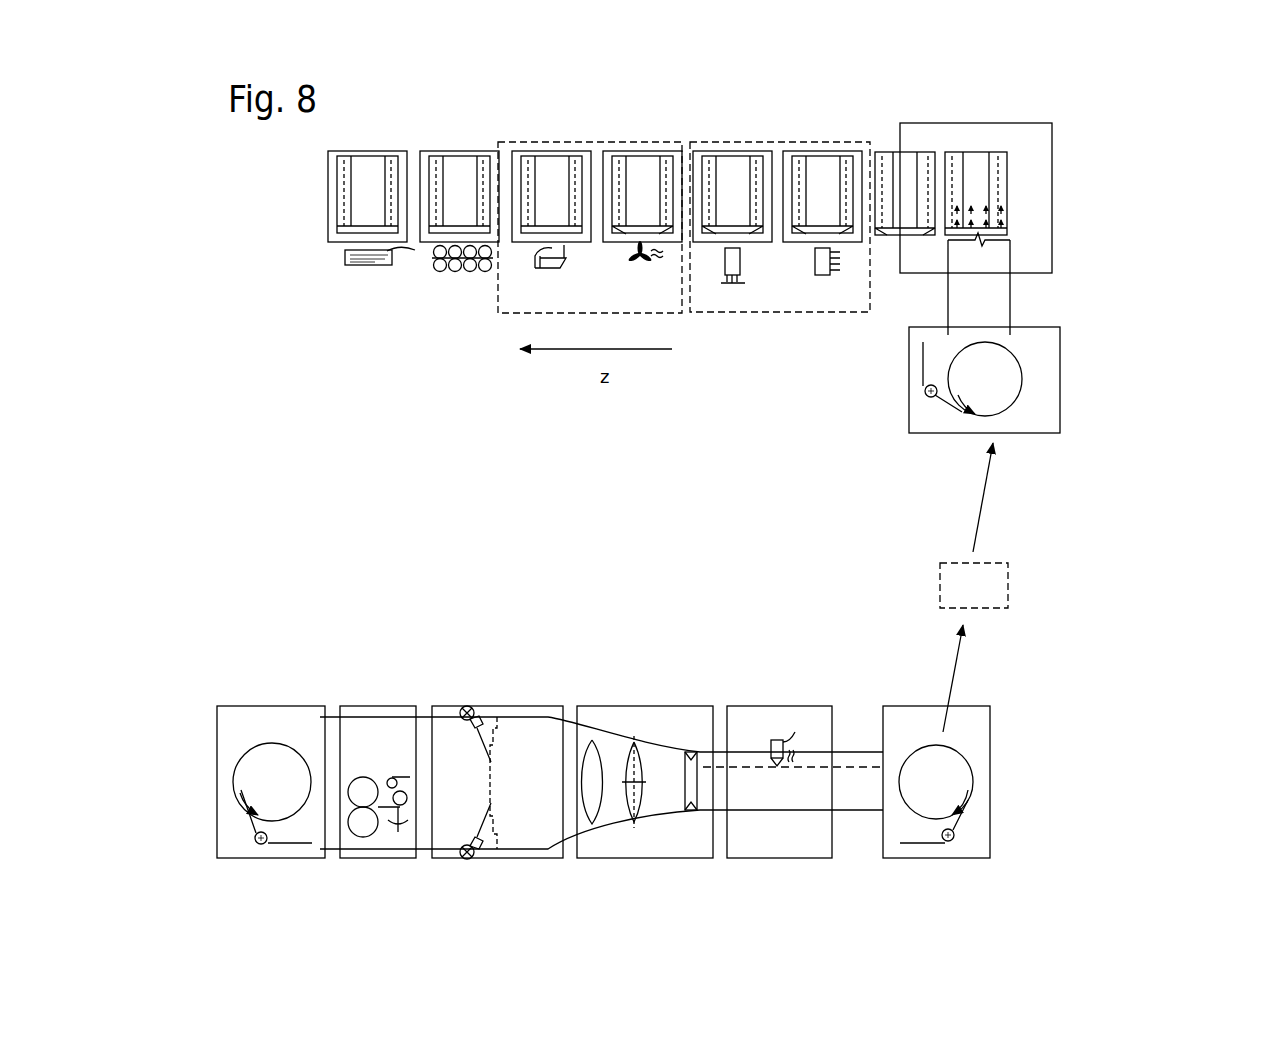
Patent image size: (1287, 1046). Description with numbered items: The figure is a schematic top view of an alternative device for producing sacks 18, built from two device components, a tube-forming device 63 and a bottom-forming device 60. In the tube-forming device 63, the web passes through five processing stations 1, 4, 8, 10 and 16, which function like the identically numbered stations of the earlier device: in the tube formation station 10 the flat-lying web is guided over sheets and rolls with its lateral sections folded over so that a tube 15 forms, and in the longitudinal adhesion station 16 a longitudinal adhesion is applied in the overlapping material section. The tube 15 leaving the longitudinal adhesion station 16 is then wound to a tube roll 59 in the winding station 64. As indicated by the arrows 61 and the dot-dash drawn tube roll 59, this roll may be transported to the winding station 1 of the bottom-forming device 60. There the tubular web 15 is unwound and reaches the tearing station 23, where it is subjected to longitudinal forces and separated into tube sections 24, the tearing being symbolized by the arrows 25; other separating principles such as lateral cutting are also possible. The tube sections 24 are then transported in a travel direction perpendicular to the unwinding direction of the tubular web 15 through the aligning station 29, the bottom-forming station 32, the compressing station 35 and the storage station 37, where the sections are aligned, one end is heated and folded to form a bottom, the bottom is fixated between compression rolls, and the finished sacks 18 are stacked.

The winding station 1 is at (915, 417).
The processing station 4 is at (385, 873).
The processing station 8 is at (502, 873).
The tube formation station 10 is at (668, 865).
The tube 15 is at (1003, 292).
The longitudinal adhesion station 16 is at (745, 680).
The sack 18 is at (372, 168).
The tearing station 23 is at (1037, 247).
The tube section 24 is at (990, 186).
The arrows 25 is at (1007, 210).
The aligning station 29 is at (823, 120).
The bottom-forming station 32 is at (588, 133).
The compressing station 35 is at (452, 122).
The storage station 37 is at (310, 192).
The tube roll 59 is at (1015, 383).
The bottom-forming device 60 is at (350, 363).
The arrows 61 is at (952, 665).
The tube-forming device 63 is at (545, 638).
The winding station 64 is at (980, 845).